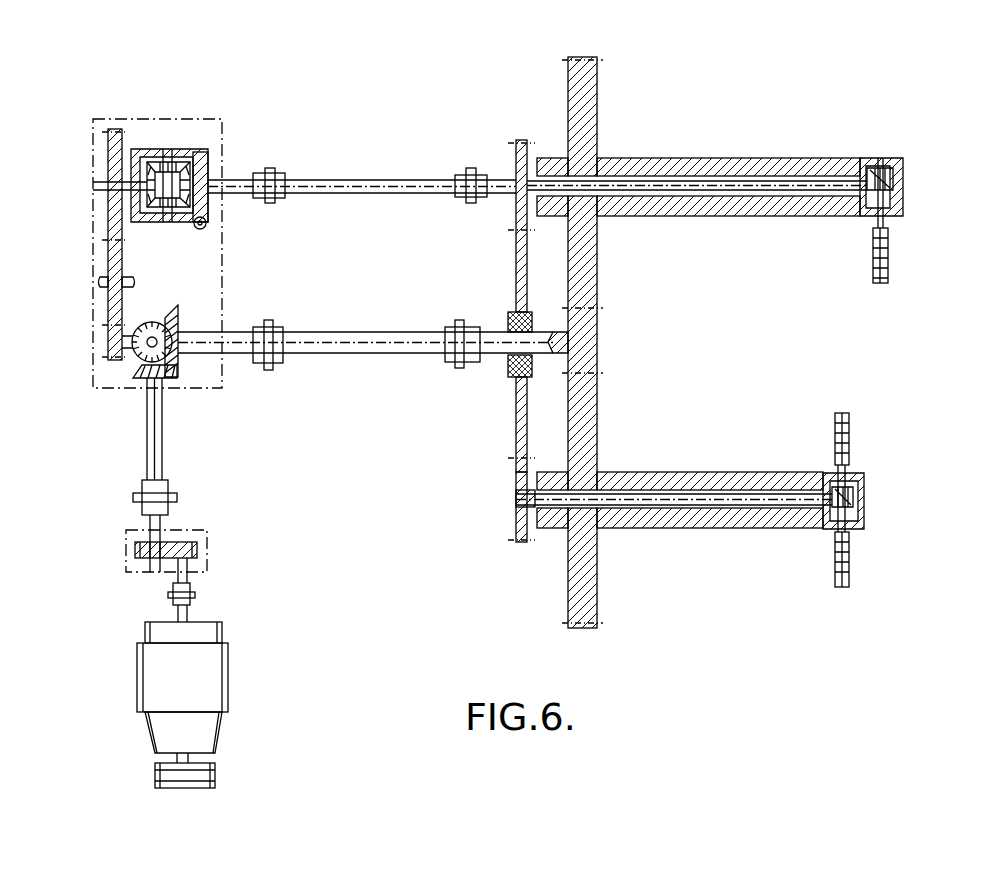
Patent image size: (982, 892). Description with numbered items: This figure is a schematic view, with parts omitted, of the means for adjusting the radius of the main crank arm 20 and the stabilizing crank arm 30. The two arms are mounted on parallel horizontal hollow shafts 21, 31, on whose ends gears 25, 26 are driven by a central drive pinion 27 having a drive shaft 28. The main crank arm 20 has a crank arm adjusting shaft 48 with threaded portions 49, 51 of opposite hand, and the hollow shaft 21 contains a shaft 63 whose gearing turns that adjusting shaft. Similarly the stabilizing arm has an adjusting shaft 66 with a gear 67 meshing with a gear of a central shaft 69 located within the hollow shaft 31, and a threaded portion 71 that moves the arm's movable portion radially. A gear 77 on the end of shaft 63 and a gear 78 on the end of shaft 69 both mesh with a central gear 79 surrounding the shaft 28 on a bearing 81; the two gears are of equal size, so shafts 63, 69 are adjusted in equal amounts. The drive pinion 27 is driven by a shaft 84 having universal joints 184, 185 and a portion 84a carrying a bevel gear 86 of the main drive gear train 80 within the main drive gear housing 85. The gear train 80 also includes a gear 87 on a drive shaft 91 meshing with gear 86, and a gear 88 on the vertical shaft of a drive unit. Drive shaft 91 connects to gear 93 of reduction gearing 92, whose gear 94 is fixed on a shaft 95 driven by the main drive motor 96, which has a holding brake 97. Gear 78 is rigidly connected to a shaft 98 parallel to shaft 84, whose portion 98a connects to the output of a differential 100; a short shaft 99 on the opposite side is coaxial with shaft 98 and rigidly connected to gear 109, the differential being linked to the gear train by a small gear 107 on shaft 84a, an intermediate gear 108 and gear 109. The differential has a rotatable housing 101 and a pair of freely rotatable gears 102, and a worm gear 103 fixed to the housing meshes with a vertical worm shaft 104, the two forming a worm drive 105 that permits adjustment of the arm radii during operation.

The main crank arm 20 is at (700, 512).
The hollow shaft 21 is at (720, 480).
The gear 25 is at (590, 587).
The gear 26 is at (590, 97).
The central drive pinion 27 is at (599, 344).
The drive shaft 28 is at (500, 352).
The stabilizing crank arm 30 is at (720, 162).
The hollow shaft 31 is at (748, 168).
The crank arm adjusting shaft 48 is at (855, 503).
The threaded portion 49 is at (835, 562).
The threaded portion 51 is at (835, 438).
The shaft 63 is at (688, 510).
The adjusting shaft 66 is at (884, 220).
The gear 67 is at (895, 178).
The central shaft 69 is at (715, 200).
The threaded portion 71 is at (873, 262).
The gear 77 is at (516, 530).
The gear 78 is at (516, 155).
The central gear 79 is at (516, 435).
The main drive gear train 80 is at (195, 384).
The bearing 81 is at (533, 318).
The shaft 84 is at (373, 368).
The shaft portion 84a is at (240, 354).
The main drive gear housing 85 is at (84, 285).
The bevel gear 86 is at (177, 320).
The gear 87 is at (143, 383).
The gear 88 is at (151, 322).
The drive shaft 91 is at (160, 455).
The reduction gearing 92 is at (211, 521).
The gear 93 is at (147, 560).
The gear 94 is at (198, 550).
The shaft 95 is at (188, 578).
The main drive motor 96 is at (215, 672).
The holding brake 97 is at (160, 776).
The shaft 98 is at (362, 180).
The shaft portion 98a is at (235, 193).
The short shaft 99 is at (120, 187).
The differential 100 is at (202, 163).
The rotatable housing 101 is at (149, 154).
The freely rotatable gears 102 is at (177, 189).
The worm gear 103 is at (210, 166).
The vertical worm shaft 104 is at (204, 229).
The worm drive 105 is at (205, 152).
The small gear 107 is at (112, 343).
The intermediate gear 108 is at (115, 258).
The gear 109 is at (108, 170).
The universal joint 184 is at (259, 327).
The universal joint 185 is at (449, 328).